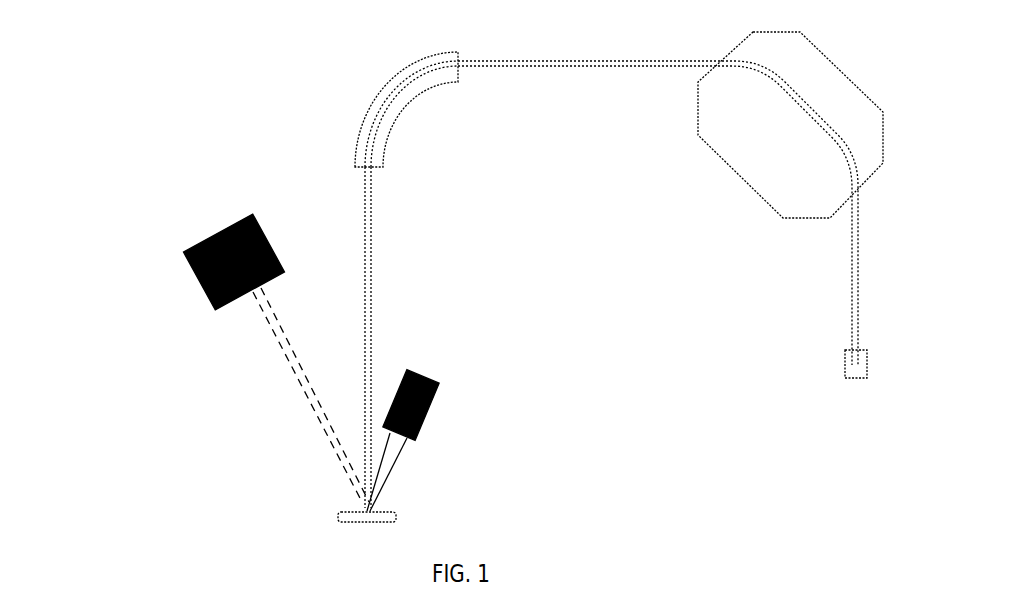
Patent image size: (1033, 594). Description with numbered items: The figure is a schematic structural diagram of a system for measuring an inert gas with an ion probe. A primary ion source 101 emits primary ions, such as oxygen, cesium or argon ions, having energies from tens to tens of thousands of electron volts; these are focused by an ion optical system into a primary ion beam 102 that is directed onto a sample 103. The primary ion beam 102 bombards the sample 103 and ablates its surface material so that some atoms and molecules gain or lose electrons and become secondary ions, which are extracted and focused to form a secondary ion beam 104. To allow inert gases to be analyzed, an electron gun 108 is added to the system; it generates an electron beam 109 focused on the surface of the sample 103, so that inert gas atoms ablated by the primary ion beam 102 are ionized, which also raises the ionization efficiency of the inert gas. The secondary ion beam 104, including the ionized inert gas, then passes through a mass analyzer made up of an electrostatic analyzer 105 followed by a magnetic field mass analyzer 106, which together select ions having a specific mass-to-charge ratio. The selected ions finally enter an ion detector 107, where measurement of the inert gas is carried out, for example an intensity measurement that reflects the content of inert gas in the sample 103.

The primary ion source 101 is at (193, 278).
The primary ion beam 102 is at (300, 395).
The sample 103 is at (340, 515).
The secondary ion beam 104 is at (366, 288).
The electrostatic analyzer 105 is at (400, 105).
The magnetic field mass analyzer 106 is at (745, 154).
The ion detector 107 is at (848, 362).
The electron gun 108 is at (440, 393).
The electron beam 109 is at (392, 462).